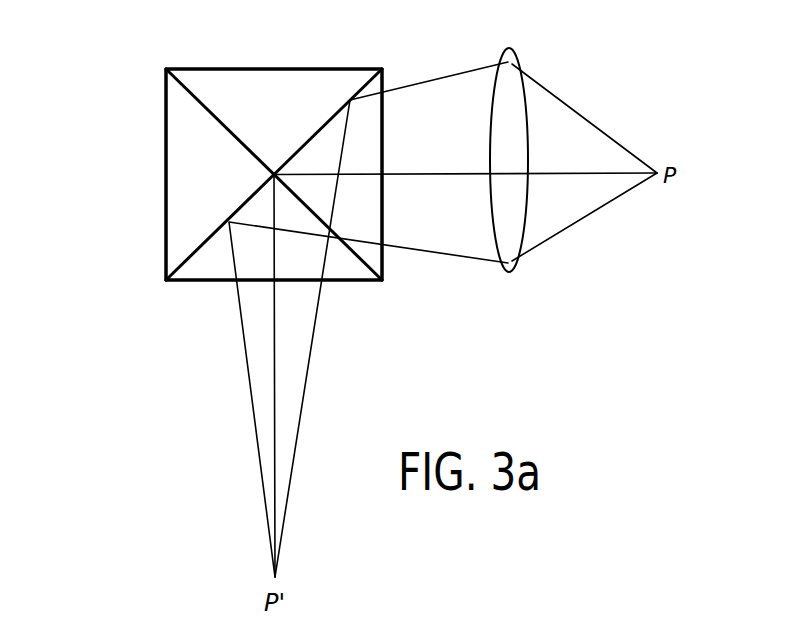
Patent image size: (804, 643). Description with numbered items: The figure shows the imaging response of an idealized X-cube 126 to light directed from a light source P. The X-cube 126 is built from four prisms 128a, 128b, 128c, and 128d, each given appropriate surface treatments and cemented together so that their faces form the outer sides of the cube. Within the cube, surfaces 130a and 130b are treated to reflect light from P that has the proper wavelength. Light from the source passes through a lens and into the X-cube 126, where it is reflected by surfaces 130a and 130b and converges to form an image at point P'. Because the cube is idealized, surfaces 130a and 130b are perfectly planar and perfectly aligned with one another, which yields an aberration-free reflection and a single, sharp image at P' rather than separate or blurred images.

The X-cube 126 is at (223, 174).
The prism 128a is at (119, 174).
The prism 128b is at (284, 327).
The prism 128c is at (274, 41).
The prism 128d is at (434, 195).
The surface 130a is at (373, 99).
The surface 130b is at (189, 261).